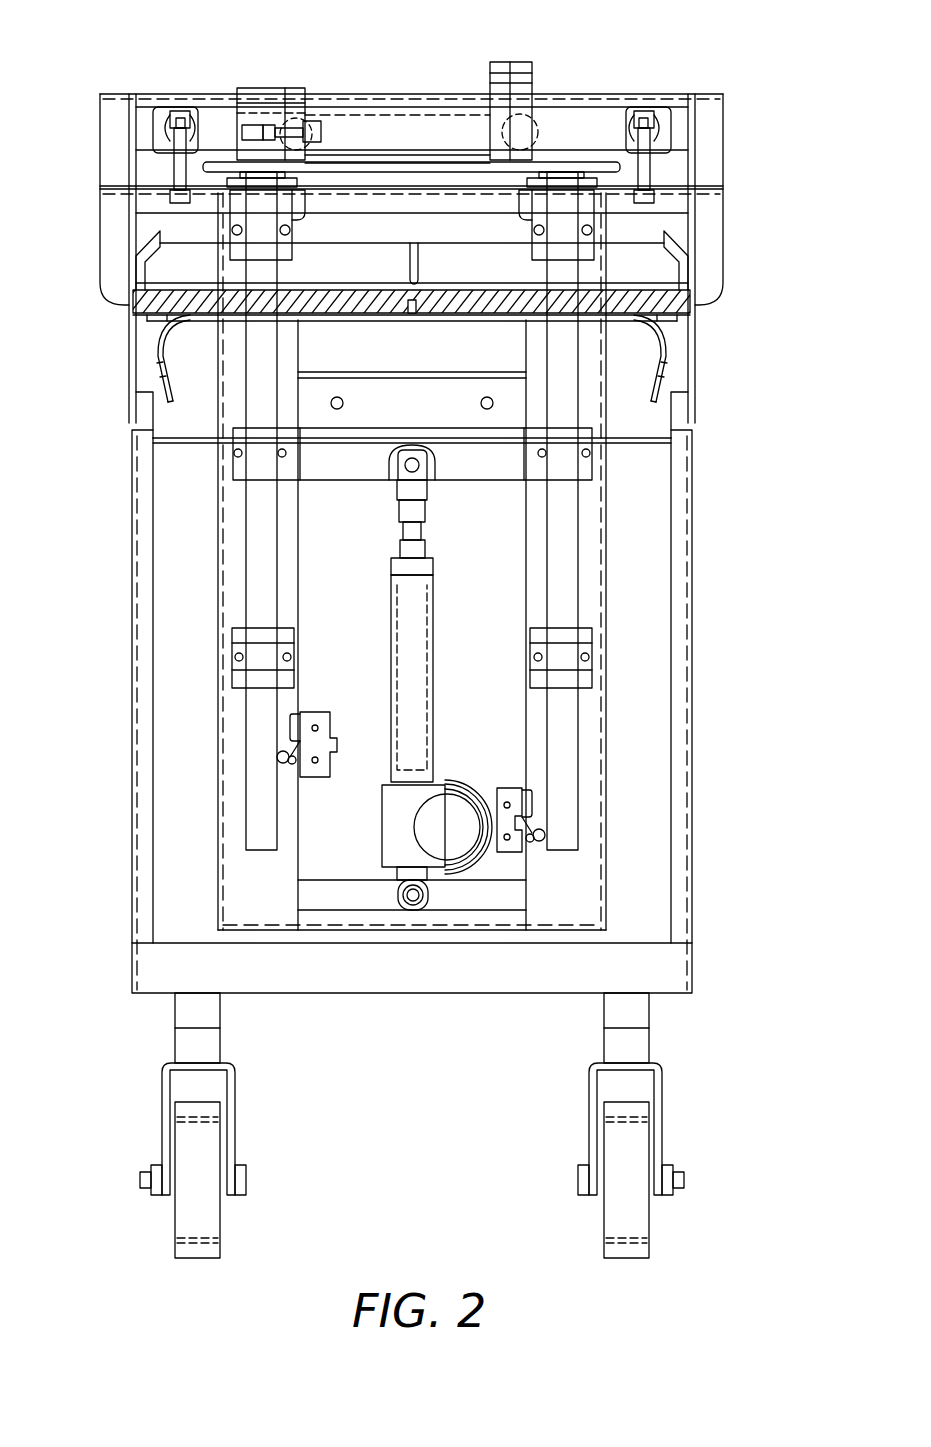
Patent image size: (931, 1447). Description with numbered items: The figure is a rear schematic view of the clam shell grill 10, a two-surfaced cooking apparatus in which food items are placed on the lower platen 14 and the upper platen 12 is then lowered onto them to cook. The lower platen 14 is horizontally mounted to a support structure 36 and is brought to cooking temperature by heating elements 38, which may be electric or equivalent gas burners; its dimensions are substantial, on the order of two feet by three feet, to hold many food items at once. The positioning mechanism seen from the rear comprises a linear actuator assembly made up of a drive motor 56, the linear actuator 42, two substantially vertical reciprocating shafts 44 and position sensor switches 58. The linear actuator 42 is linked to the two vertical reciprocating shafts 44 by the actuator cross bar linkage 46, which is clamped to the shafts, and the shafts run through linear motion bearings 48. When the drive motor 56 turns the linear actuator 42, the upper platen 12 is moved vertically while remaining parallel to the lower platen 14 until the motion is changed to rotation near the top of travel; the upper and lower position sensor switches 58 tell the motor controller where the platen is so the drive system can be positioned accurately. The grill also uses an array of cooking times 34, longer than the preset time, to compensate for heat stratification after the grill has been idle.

The clam shell grill 10 is at (741, 66).
The upper platen 12 is at (688, 290).
The lower platen 14 is at (672, 305).
The array of cooking times 34 is at (415, 313).
The support structure 36 is at (152, 493).
The heating elements 38 is at (652, 398).
The linear actuator 42 is at (435, 598).
The vertical reciprocating shafts 44 is at (246, 805).
The actuator cross bar linkage 46 is at (335, 480).
The linear motion bearings 48 is at (265, 628).
The drive motor 56 is at (447, 827).
The position sensor switches 58 is at (315, 712).